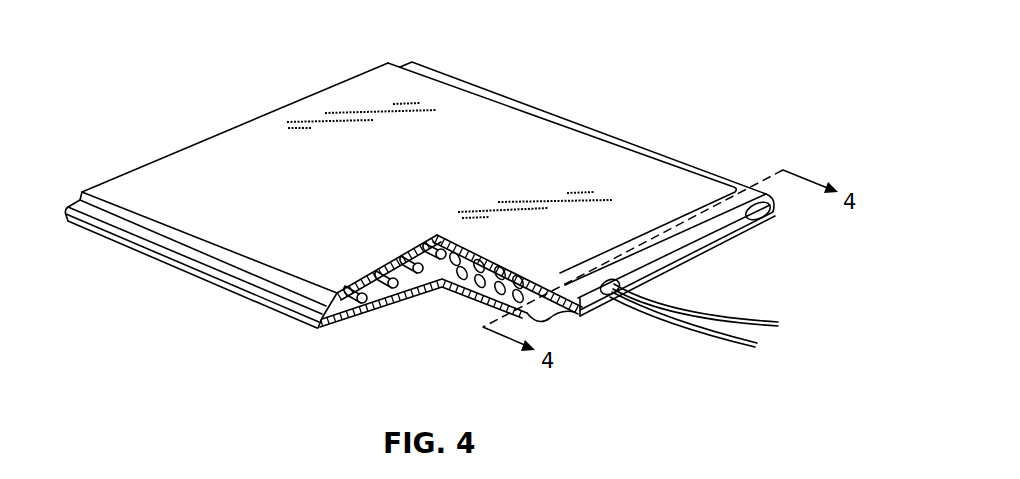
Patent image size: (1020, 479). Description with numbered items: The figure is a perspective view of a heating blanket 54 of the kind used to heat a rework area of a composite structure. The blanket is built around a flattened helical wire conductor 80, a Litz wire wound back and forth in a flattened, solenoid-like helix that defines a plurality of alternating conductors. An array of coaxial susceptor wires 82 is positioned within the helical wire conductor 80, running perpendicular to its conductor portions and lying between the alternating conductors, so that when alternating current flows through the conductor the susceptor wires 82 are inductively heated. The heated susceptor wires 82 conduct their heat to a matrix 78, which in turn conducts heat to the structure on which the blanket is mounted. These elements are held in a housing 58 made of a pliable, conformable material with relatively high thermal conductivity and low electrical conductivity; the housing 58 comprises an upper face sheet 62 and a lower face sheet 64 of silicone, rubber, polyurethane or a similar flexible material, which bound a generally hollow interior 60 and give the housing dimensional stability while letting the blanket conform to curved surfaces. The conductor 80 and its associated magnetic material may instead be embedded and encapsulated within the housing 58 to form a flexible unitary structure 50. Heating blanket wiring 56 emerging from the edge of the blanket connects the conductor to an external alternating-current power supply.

The unitary structure 50 is at (616, 36).
The heating blanket 54 is at (611, 132).
The heating blanket wiring 56 is at (755, 318).
The housing 58 is at (677, 181).
The interior 60 is at (352, 306).
The upper face sheet 62 is at (416, 97).
The lower face sheet 64 is at (527, 313).
The matrix 78 is at (440, 258).
The flattened helical wire conductor 80 is at (483, 275).
The array of coaxial susceptor wires 82 is at (417, 274).